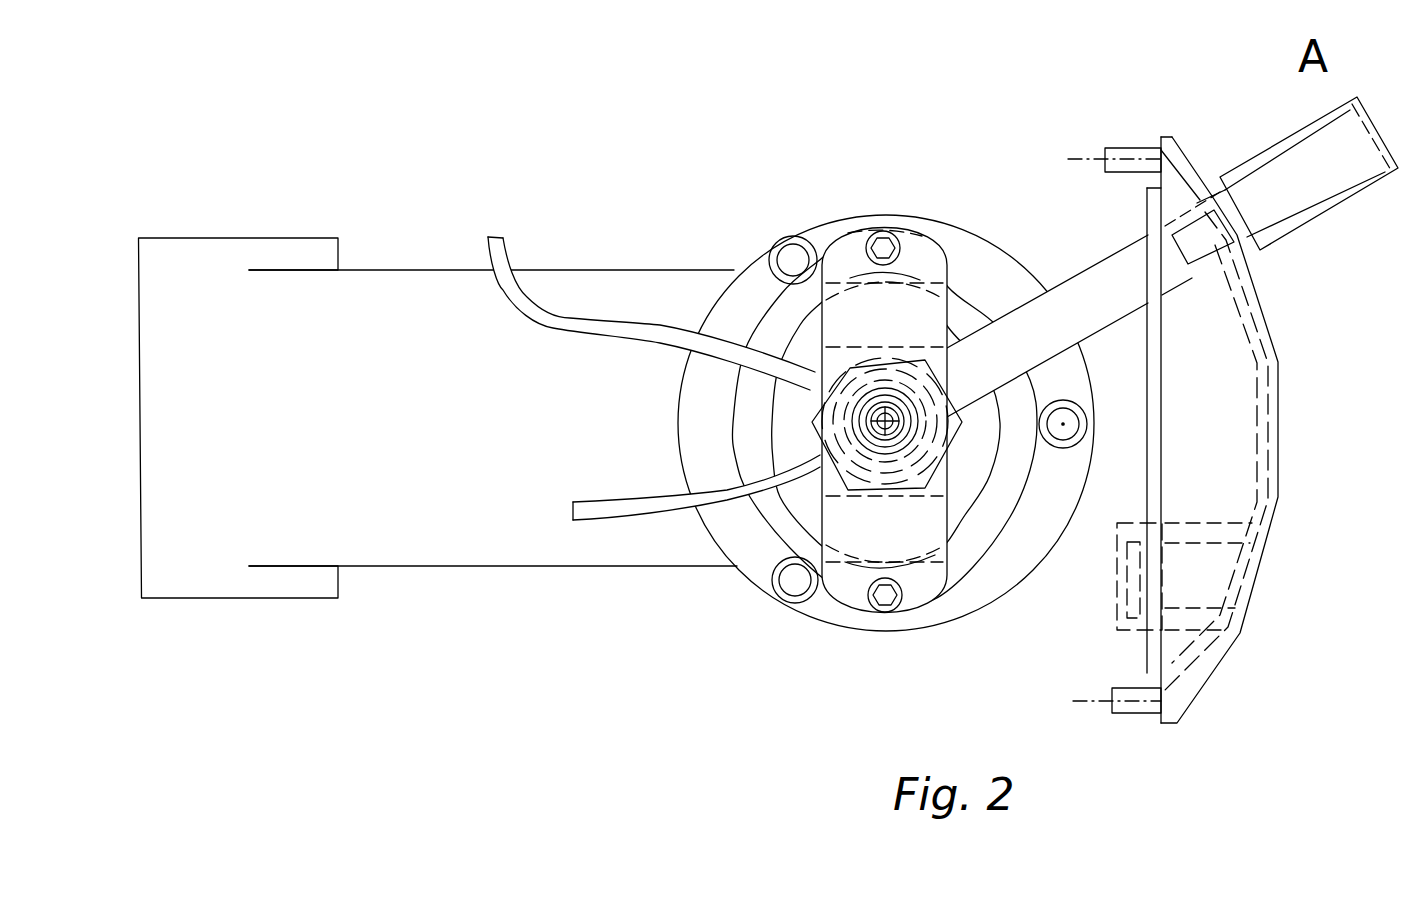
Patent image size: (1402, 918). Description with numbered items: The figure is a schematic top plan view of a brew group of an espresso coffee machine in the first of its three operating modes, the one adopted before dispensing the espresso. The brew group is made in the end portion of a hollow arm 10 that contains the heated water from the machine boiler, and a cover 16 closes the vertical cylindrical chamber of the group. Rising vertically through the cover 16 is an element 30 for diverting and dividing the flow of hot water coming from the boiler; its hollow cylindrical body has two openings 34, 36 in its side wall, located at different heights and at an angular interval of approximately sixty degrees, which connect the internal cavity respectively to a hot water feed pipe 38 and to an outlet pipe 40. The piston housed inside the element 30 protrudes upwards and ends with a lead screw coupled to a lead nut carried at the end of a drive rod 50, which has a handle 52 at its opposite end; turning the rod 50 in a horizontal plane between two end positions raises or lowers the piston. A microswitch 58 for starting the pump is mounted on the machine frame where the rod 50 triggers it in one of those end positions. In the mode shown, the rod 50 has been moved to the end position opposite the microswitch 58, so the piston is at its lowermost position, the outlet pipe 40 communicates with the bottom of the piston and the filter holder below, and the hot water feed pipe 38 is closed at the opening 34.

The hollow arm 10 is at (356, 287).
The cover 16 is at (950, 613).
The element for diverting and dividing the flow of hot water 30 is at (798, 413).
The opening 34 is at (848, 422).
The opening 36 is at (848, 422).
The hot water feed pipe 38 is at (597, 512).
The outlet pipe 40 is at (540, 313).
The drive rod 50 is at (1082, 292).
The handle 52 is at (1325, 177).
The microswitch 58 is at (1123, 623).